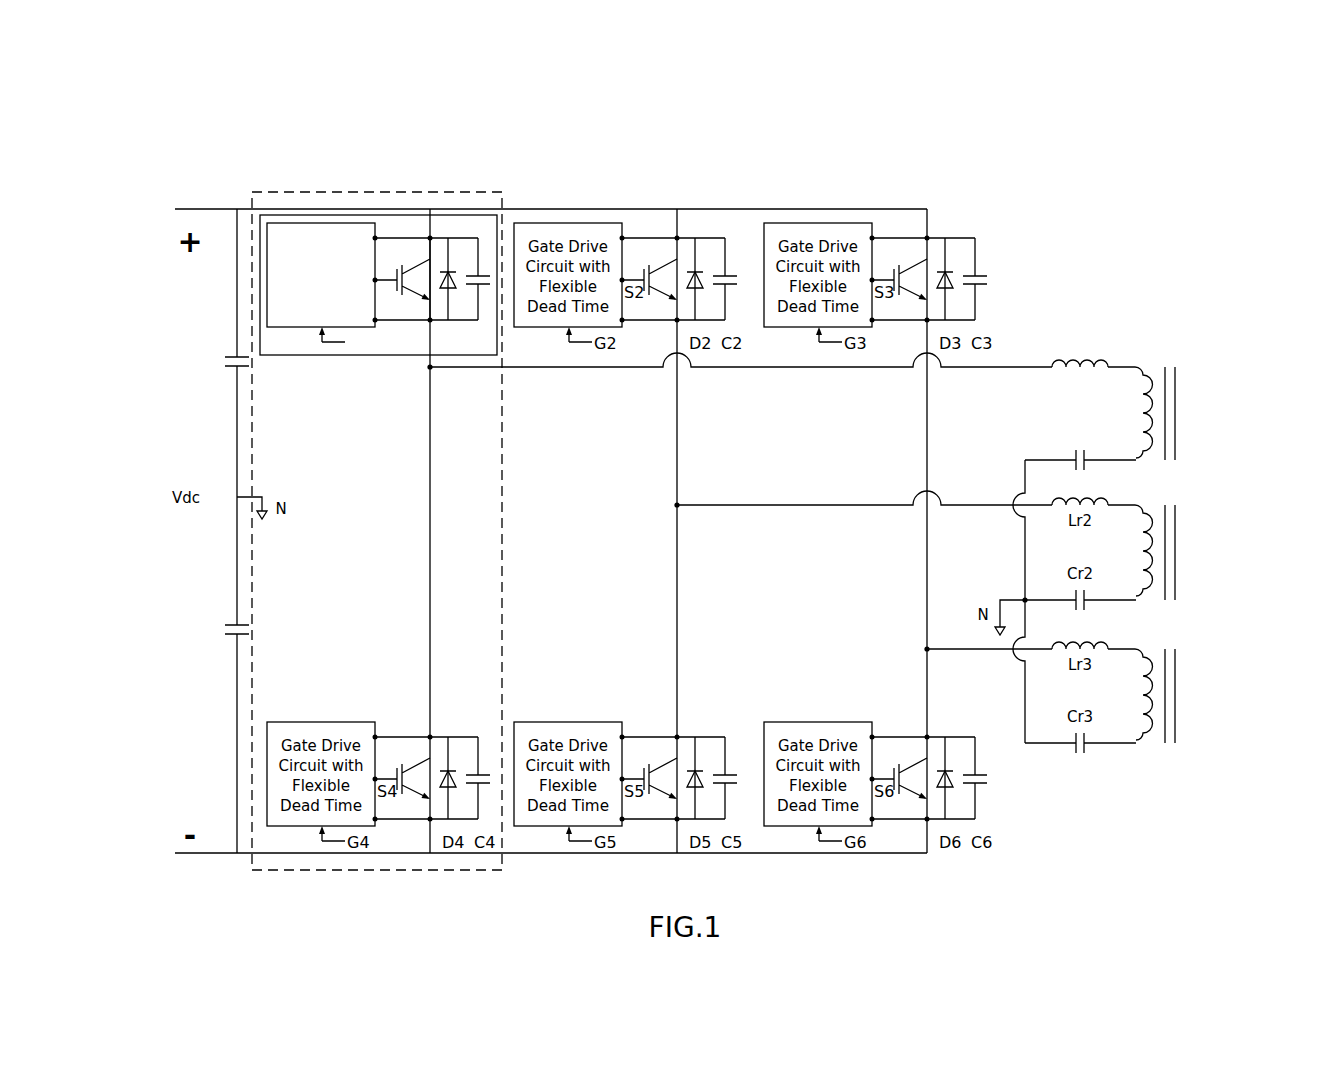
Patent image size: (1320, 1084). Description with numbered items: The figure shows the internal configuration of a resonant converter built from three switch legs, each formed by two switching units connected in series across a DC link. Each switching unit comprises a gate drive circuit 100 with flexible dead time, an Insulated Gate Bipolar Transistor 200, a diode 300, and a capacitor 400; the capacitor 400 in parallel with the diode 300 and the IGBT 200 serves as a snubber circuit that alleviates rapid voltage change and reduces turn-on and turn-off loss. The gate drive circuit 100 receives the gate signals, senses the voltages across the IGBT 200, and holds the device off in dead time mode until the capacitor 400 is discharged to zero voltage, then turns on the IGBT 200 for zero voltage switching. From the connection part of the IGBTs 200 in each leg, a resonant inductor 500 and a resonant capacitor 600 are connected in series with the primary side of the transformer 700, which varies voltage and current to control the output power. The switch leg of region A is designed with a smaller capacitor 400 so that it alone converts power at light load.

The region A is at (289, 190).
The gate drive circuit 100 is at (320, 221).
The Insulated Gate Bipolar Transistor (IGBT) 200 is at (398, 246).
The diode 300 is at (444, 226).
The capacitor 400 is at (486, 225).
The resonant inductor 500 is at (1088, 350).
The resonant capacitor 600 is at (1055, 448).
The transformer 700 is at (1186, 413).